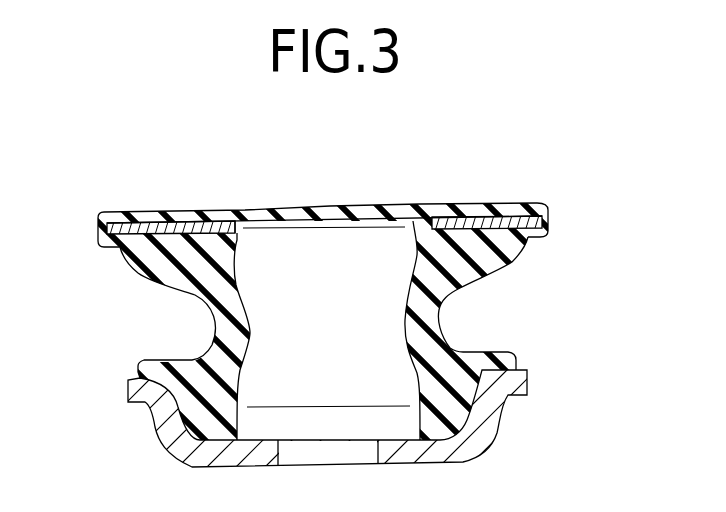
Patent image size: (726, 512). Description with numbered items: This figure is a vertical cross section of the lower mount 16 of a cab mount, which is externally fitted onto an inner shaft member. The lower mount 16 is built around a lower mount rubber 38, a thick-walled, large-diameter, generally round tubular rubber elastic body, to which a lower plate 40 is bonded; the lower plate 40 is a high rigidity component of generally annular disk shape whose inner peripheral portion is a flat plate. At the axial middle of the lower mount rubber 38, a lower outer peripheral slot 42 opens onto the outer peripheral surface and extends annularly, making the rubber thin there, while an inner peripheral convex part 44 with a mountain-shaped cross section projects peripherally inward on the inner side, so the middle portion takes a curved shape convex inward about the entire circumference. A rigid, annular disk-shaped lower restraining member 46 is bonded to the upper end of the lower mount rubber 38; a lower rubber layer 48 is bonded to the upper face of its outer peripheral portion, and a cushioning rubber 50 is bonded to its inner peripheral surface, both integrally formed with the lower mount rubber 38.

The lower mount 16 is at (363, 317).
The lower mount rubber 38 is at (480, 252).
The lower plate 40 is at (475, 436).
The lower outer peripheral slot 42 is at (482, 352).
The inner peripheral convex part 44 is at (411, 324).
The lower restraining member 46 is at (203, 226).
The lower rubber layer 48 is at (144, 219).
The cushioning rubber 50 is at (230, 228).